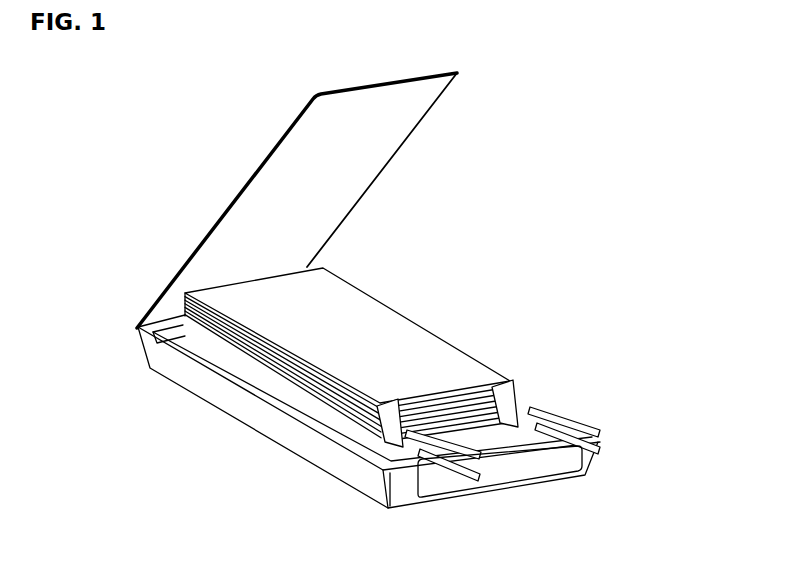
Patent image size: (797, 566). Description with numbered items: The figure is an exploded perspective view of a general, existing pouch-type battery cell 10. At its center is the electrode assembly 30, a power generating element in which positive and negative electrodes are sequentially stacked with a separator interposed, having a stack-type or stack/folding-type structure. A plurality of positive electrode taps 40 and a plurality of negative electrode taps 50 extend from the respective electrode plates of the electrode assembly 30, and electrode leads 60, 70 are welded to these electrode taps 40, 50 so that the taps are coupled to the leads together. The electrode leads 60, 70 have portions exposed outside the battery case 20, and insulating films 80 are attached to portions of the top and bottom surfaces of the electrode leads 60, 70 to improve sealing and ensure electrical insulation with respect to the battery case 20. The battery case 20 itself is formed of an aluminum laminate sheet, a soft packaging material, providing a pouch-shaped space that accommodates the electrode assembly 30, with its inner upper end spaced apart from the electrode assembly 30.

The pouch-type battery cell 10 is at (108, 99).
The battery case 20 is at (137, 328).
The electrode assembly 30 is at (446, 315).
The positive electrode taps 40 is at (330, 434).
The negative electrode taps 50 is at (520, 393).
The electrode lead 60 is at (376, 496).
The electrode lead 70 is at (541, 413).
The insulating films 80 is at (437, 500).